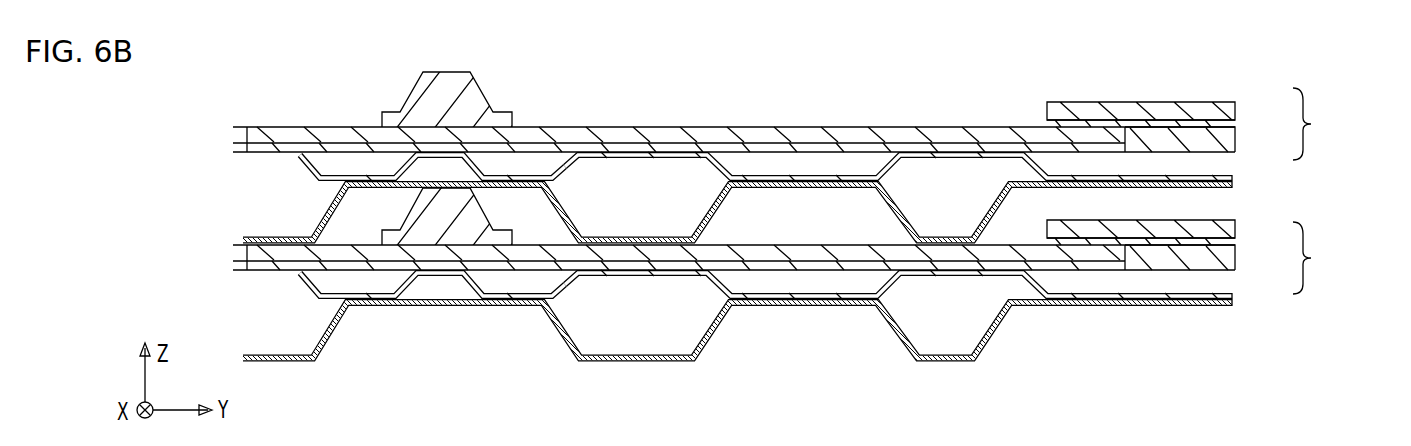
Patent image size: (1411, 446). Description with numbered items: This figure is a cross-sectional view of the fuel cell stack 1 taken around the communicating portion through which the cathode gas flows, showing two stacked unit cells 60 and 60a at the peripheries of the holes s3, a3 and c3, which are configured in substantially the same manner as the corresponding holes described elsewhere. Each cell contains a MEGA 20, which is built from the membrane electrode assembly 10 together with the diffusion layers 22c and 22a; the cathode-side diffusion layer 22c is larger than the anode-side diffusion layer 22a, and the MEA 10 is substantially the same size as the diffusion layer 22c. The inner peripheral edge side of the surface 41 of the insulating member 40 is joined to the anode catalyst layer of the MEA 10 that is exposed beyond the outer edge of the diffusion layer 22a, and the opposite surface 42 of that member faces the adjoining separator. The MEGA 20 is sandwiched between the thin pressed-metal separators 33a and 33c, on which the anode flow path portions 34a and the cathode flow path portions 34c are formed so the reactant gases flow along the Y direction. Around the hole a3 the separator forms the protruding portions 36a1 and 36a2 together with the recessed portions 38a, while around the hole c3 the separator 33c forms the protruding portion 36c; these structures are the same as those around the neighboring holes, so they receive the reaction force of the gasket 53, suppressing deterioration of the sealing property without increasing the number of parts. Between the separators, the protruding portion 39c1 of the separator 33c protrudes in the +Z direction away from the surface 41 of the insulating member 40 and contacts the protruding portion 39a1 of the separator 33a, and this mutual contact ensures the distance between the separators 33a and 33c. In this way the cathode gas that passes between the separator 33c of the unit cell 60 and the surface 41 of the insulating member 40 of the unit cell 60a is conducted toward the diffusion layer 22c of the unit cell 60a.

The fuel cell stack 1 is at (1309, 51).
The membrane electrode assembly 10 is at (1236, 124).
The MEGA 20 is at (1317, 191).
The diffusion layer 22a is at (1233, 143).
The diffusion layer 22c is at (1232, 106).
The separator 33a is at (1234, 178).
The separator 33c is at (1234, 186).
The anode flow path portions 34a is at (1050, 177).
The cathode flow path portions 34c is at (1060, 190).
The protruding portion 36a1 is at (352, 168).
The protruding portion 36a2 is at (521, 172).
The protruding portion 36c is at (533, 190).
The recessed portion 38a is at (438, 158).
The protruding portion 39a1 is at (874, 180).
The protruding portion 39c1 is at (800, 182).
The insulating member 40 is at (713, 114).
The surface 41 is at (637, 128).
The second surface of separator 42 is at (762, 142).
The gasket 53 is at (422, 97).
The unit cell 60 is at (1352, 155).
The unit cell 60a is at (1350, 286).
The hole s3 is at (247, 134).
The hole a3 is at (233, 148).
The hole c3 is at (243, 238).